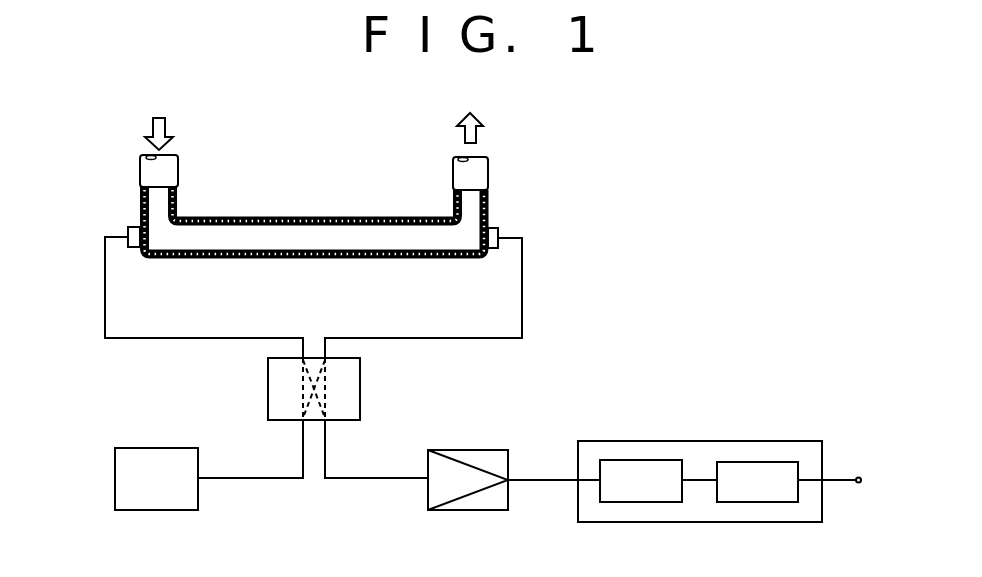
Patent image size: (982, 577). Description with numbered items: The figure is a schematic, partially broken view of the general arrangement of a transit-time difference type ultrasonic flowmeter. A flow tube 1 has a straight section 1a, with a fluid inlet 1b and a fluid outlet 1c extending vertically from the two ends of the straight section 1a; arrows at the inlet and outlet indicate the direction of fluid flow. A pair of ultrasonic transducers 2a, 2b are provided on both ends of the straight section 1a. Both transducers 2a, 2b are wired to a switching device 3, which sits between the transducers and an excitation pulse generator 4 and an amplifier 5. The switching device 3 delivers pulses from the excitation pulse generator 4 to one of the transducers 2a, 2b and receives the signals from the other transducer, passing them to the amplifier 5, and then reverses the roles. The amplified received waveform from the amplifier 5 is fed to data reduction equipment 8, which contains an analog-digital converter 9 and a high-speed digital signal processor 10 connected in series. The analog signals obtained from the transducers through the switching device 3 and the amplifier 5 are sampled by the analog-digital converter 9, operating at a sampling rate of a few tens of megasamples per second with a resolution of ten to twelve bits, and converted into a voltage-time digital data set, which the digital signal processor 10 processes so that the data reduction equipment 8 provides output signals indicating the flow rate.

The flow tube 1 is at (309, 207).
The straight section 1a is at (378, 217).
The fluid inlet 1b is at (139, 173).
The fluid outlet 1c is at (489, 172).
The ultrasonic transducer 2a is at (128, 230).
The ultrasonic transducer 2b is at (500, 230).
The switching device 3 is at (361, 386).
The excitation pulse generator 4 is at (142, 448).
The amplifier 5 is at (477, 450).
The data reduction equipment 8 is at (705, 441).
The analog-digital converter 9 is at (638, 460).
The high-speed digital signal processor 10 is at (767, 462).